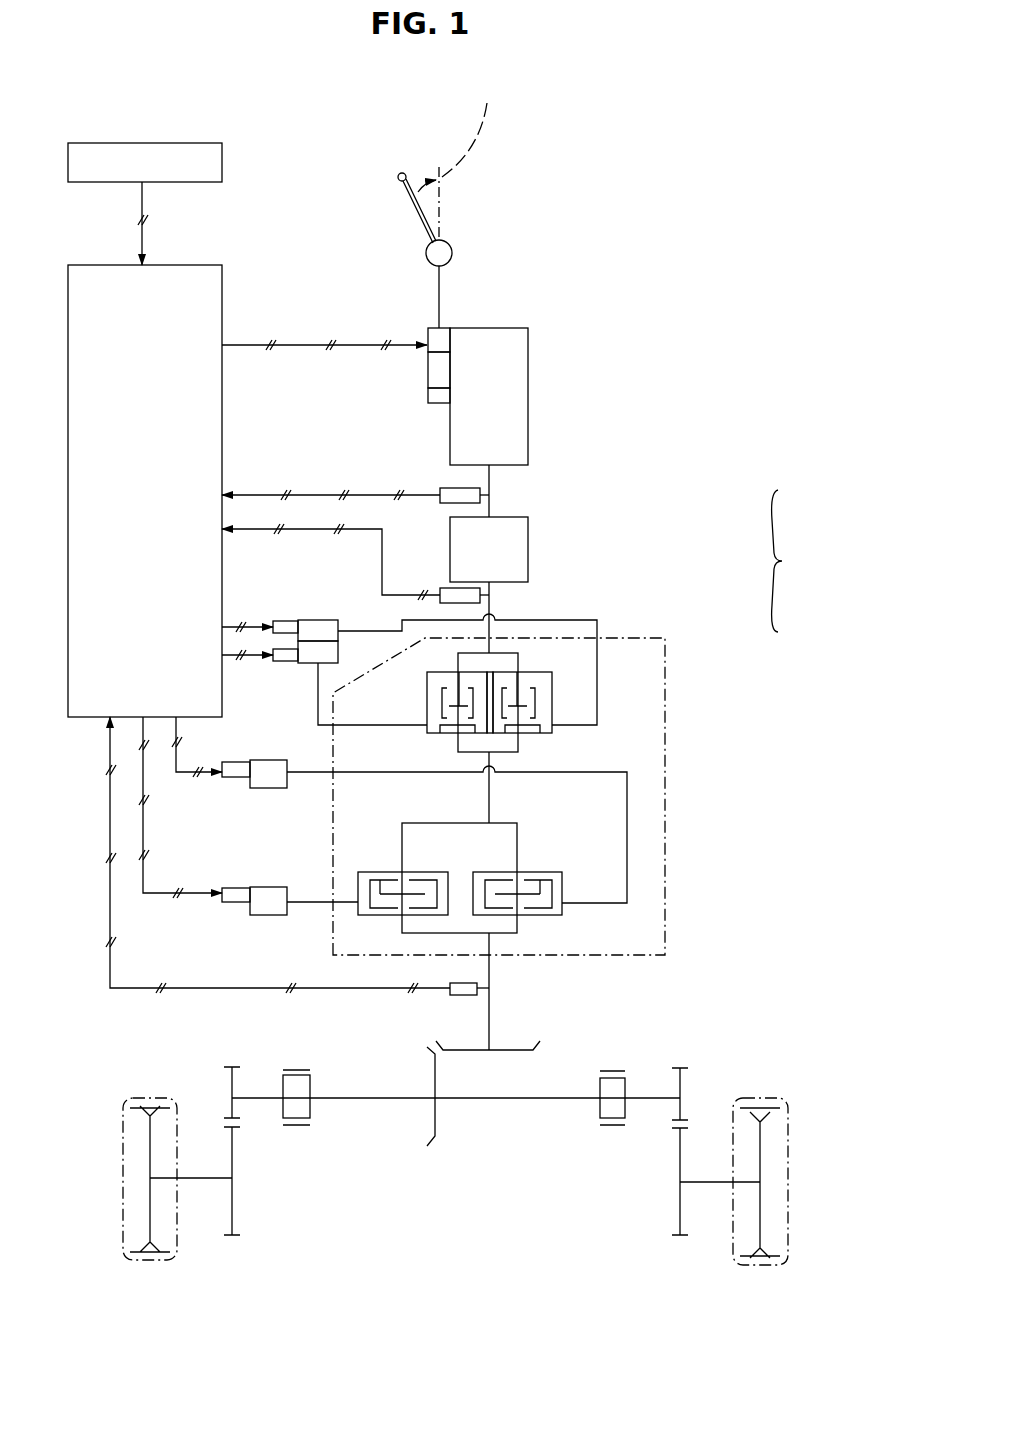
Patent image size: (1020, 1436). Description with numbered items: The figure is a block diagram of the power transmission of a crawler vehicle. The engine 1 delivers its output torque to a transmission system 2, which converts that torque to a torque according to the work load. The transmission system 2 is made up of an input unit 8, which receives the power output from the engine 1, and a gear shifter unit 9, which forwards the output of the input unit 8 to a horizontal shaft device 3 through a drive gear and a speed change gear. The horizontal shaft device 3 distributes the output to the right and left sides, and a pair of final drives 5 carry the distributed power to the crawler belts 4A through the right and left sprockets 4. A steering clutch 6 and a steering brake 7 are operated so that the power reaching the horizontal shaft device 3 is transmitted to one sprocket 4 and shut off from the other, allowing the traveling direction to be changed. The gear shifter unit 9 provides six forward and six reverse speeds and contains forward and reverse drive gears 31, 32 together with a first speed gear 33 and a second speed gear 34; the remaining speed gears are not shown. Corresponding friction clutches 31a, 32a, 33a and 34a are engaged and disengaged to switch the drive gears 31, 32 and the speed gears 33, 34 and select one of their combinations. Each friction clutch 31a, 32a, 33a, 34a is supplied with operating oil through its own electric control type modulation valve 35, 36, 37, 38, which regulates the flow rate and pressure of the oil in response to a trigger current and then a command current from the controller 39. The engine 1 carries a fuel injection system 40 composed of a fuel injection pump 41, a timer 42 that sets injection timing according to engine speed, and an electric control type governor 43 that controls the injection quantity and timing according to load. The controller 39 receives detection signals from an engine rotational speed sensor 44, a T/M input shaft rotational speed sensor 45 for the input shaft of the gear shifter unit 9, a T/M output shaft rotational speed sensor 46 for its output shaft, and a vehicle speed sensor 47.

The engine 1 is at (530, 392).
The transmission system 2 is at (786, 561).
The horizontal shaft device 3 is at (498, 1100).
The sprocket 4 is at (147, 1215).
The crawler belt 4A is at (178, 1235).
The final drive 5 is at (238, 1205).
The steering clutch 6 is at (283, 1085).
The steering brake 7 is at (302, 1070).
The input unit 8 is at (535, 535).
The gear shifter unit 9 is at (667, 682).
The forward drive gear 31 is at (537, 662).
The friction clutch 31a is at (535, 733).
The reverse drive gear 32 is at (417, 678).
The friction clutch 32a is at (445, 733).
The first speed gear 33 is at (570, 885).
The friction clutch 33a is at (540, 870).
The second speed gear 34 is at (350, 888).
The friction clutch 34a is at (380, 878).
The electric control type modulation valve 35 is at (310, 620).
The electric control type modulation valve 36 is at (310, 665).
The electric control type modulation valve 37 is at (247, 790).
The electric control type modulation valve 38 is at (258, 918).
The controller 39 is at (129, 474).
The fuel injection system 40 is at (420, 322).
The fuel injection pump 41 is at (427, 372).
The timer 42 is at (427, 397).
The electric control type governor 43 is at (427, 330).
The engine rotational speed sensor 44 is at (440, 490).
The T/M input shaft rotational speed sensor 45 is at (445, 595).
The T/M output shaft rotational speed sensor 46 is at (460, 1000).
The vehicle speed sensor 47 is at (212, 143).